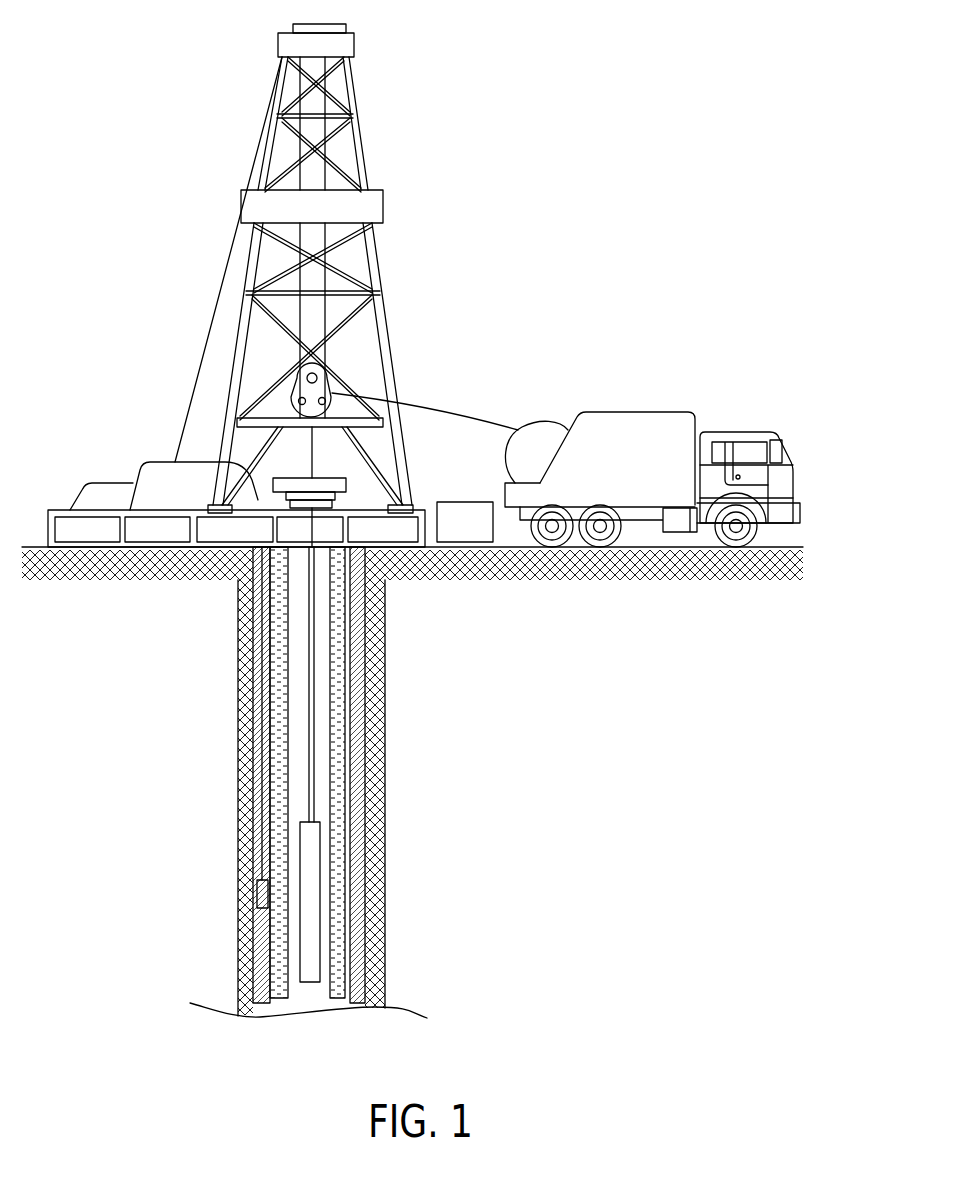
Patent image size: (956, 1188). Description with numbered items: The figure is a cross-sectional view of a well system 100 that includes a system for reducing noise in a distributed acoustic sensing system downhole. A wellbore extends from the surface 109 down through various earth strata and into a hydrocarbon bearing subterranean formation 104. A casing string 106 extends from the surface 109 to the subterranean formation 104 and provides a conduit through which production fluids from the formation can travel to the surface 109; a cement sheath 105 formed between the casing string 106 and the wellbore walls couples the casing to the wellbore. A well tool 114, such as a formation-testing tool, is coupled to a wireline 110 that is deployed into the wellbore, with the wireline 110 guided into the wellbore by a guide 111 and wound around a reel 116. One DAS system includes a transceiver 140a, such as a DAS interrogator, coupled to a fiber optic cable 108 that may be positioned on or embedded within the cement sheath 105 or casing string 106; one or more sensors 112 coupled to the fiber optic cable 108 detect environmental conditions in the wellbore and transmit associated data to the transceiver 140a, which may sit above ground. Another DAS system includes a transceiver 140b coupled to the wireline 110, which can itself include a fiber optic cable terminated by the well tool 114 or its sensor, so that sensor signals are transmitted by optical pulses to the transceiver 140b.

The well system 100 is at (565, 195).
The subterranean formation 104 is at (372, 676).
The cement sheath 105 is at (358, 890).
The casing string 106 is at (280, 722).
The fiber optic cable 108 is at (258, 665).
The surface 109 is at (347, 481).
The wireline 110 is at (437, 410).
The guide 111 is at (323, 377).
The sensor 112 is at (258, 898).
The well tool 114 is at (322, 852).
The reel 116 is at (545, 432).
The transceiver 140a is at (257, 558).
The transceiver 140b is at (463, 490).